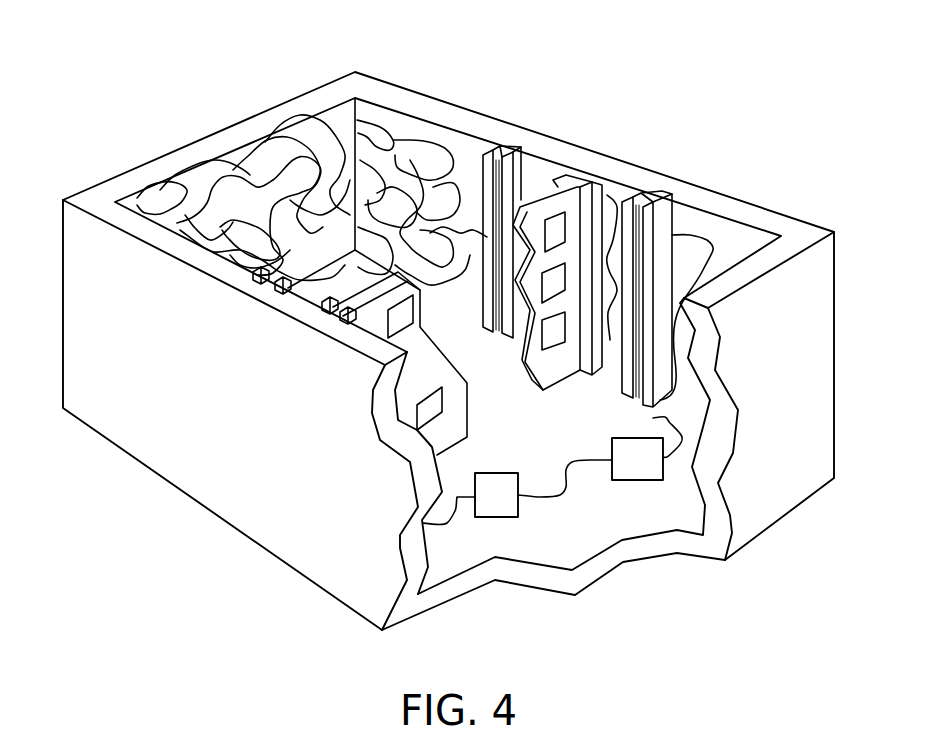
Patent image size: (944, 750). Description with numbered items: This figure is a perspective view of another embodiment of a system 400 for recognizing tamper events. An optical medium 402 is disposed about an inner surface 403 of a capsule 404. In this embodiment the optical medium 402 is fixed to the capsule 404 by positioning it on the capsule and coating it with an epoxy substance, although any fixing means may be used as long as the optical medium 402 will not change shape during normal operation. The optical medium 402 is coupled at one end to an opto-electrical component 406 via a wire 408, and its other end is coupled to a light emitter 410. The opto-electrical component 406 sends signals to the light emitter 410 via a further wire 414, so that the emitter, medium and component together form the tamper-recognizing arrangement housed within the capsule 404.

The system 400 is at (668, 100).
The optical medium 402 is at (395, 128).
The inner surface 403 is at (330, 121).
The capsule 404 is at (195, 457).
The opto-electrical component 406 is at (497, 505).
The wire 408 is at (265, 140).
The light emitter 410 is at (637, 470).
The wire 414 is at (567, 458).